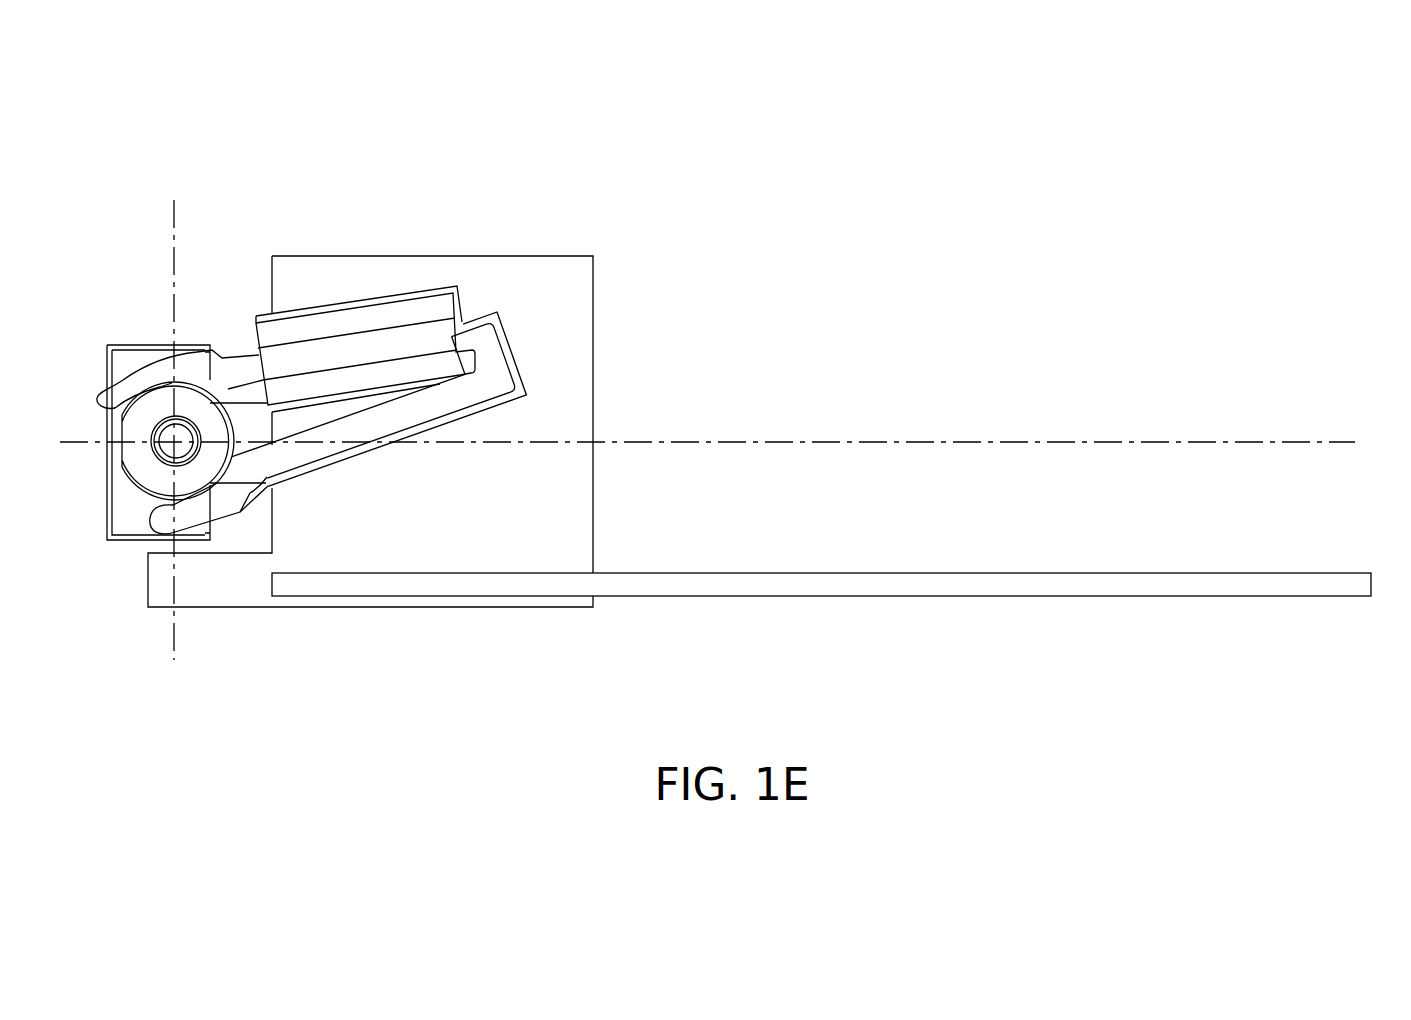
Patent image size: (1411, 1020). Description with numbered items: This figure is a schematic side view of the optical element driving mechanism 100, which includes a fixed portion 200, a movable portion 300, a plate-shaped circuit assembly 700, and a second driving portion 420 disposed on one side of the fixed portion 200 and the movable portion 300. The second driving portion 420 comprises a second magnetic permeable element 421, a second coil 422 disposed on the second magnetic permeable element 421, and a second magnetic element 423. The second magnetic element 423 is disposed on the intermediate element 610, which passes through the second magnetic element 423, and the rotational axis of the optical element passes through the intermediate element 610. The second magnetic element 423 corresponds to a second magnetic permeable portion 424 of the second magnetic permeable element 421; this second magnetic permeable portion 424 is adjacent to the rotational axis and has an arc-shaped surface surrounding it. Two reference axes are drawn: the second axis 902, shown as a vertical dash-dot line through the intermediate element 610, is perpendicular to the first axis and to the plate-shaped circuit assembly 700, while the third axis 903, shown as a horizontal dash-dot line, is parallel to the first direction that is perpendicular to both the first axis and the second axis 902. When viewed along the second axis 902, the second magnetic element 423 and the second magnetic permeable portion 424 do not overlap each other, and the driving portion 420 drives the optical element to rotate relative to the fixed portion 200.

The optical element driving mechanism 100 is at (208, 97).
The fixed portion 200 is at (543, 483).
The movable portion 300 is at (138, 517).
The second driving portion 420 is at (148, 239).
The second magnetic permeable element 421 is at (483, 357).
The second coil 422 is at (393, 320).
The second magnetic element 423 is at (142, 458).
The second magnetic permeable portion 424 is at (246, 372).
The intermediate element 610 is at (167, 417).
The circuit assembly 700 is at (1107, 585).
The second axis 902 is at (174, 450).
The third axis 903 is at (734, 443).